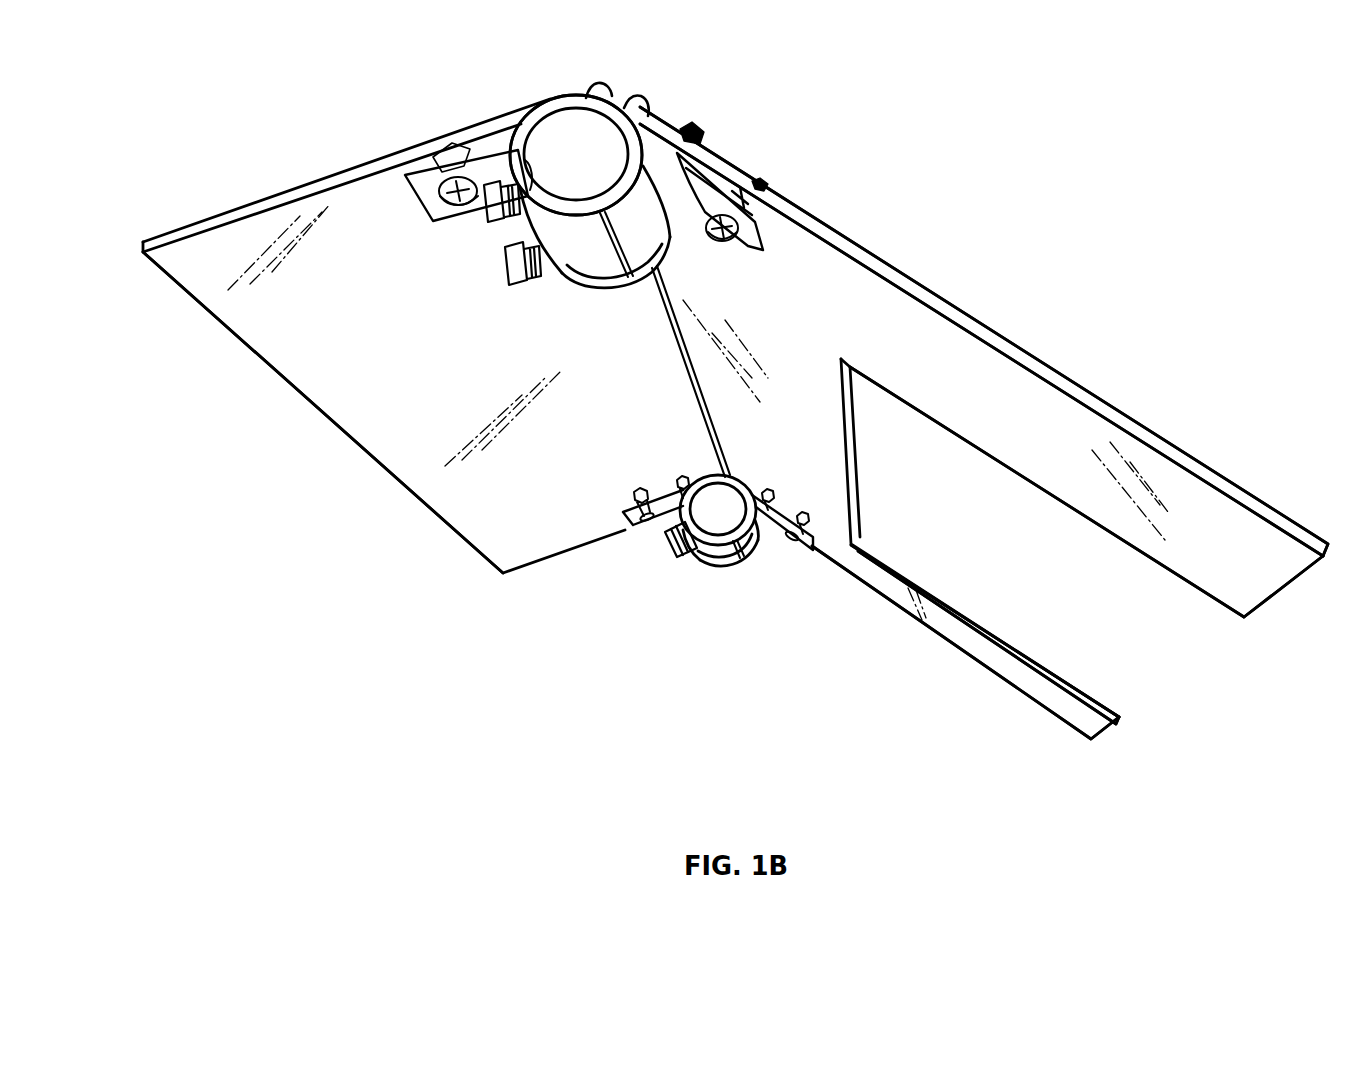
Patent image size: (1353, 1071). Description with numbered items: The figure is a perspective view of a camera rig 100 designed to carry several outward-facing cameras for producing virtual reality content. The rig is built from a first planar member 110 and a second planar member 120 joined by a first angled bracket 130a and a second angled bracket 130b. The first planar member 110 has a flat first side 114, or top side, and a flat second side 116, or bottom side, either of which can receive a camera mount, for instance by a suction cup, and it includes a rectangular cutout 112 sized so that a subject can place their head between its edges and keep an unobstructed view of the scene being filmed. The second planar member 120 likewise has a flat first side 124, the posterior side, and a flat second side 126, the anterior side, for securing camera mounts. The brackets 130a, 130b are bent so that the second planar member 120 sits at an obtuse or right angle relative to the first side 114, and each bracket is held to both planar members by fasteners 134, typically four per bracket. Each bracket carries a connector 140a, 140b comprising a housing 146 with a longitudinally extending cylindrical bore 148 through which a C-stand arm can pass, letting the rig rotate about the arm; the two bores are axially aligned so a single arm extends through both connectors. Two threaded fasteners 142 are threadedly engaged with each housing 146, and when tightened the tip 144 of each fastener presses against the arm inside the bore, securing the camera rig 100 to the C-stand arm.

The camera rig 100 is at (392, 684).
The first planar member 110 is at (887, 300).
The rectangular cutout 112 is at (1188, 672).
The first side 114 is at (1000, 450).
The second side 116 is at (1045, 360).
The second planar member 120 is at (362, 438).
The first side 124 is at (278, 336).
The second side 126 is at (330, 178).
The first angled bracket 130a is at (778, 508).
The second angled bracket 130b is at (752, 246).
The fasteners 134 is at (440, 200).
The first connector 140a is at (730, 566).
The second connector 140b is at (590, 283).
The threaded fasteners 142 is at (484, 220).
The tip 144 is at (523, 150).
The housing 146 is at (611, 268).
The cylindrical bore 148 is at (577, 132).